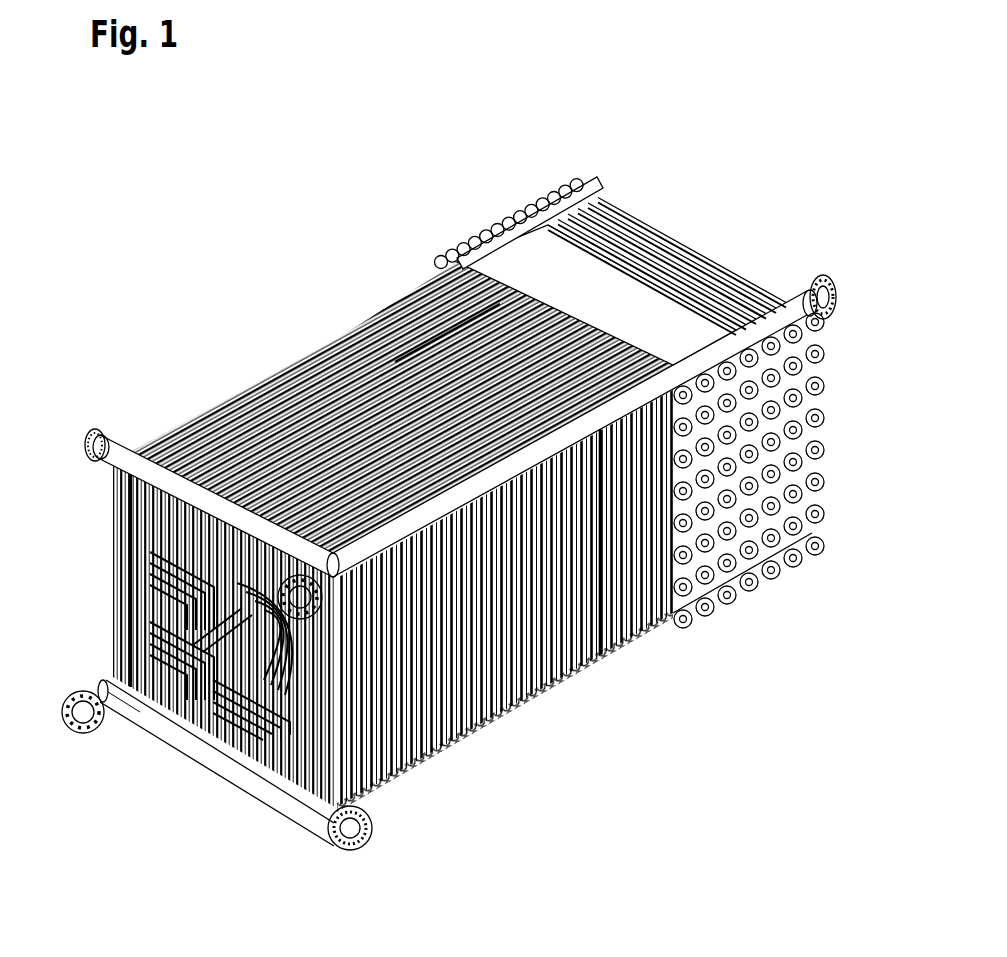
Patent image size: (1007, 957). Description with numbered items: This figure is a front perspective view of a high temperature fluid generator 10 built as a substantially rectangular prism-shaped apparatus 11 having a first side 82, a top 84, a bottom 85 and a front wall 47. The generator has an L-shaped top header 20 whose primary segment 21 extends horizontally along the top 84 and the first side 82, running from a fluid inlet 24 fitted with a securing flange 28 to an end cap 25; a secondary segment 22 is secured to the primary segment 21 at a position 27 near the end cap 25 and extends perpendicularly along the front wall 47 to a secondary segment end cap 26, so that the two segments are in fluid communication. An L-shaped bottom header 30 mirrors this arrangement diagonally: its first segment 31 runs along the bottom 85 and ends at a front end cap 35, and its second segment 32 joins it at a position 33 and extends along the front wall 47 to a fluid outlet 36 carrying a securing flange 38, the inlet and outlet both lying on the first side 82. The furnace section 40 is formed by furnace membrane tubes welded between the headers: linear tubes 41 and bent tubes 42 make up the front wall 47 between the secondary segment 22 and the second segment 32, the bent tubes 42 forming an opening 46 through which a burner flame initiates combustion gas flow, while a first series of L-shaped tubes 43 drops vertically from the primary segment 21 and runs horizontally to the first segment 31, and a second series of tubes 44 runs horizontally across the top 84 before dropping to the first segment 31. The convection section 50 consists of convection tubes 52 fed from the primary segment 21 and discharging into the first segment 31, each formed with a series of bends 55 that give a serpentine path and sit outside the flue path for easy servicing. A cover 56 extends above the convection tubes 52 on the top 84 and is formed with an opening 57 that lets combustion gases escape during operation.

The high temperature fluid generator 10 is at (165, 170).
The rectangular prism-shaped apparatus 11 is at (793, 100).
The top header 20 is at (138, 452).
The primary segment 21 is at (762, 327).
The secondary segment 22 is at (113, 453).
The fluid inlet 24 is at (843, 284).
The end cap 25 is at (333, 582).
The secondary segment end cap 26 is at (93, 435).
The position 27 is at (345, 568).
The securing flange 28 is at (815, 276).
The bottom header 30 is at (72, 665).
The first segment 31 is at (113, 700).
The second segment 32 is at (225, 764).
The position 33 is at (122, 703).
The front end cap 35 is at (80, 712).
The fluid outlet 36 is at (358, 826).
The securing flange 38 is at (348, 852).
The furnace section 40 is at (548, 714).
The linear tubes 41 is at (130, 543).
The bent tubes 42 is at (177, 600).
The first series of tubes 43 is at (600, 640).
The second series of tubes 44 is at (278, 377).
The opening 46 is at (218, 652).
The front wall 47 is at (262, 742).
The convection section 50 is at (768, 600).
The convection tubes 52 is at (462, 244).
The bends 55 is at (560, 183).
The cover 56 is at (525, 250).
The opening 57 is at (667, 242).
The first side 82 is at (722, 707).
The top 84 is at (435, 338).
The bottom 85 is at (648, 648).